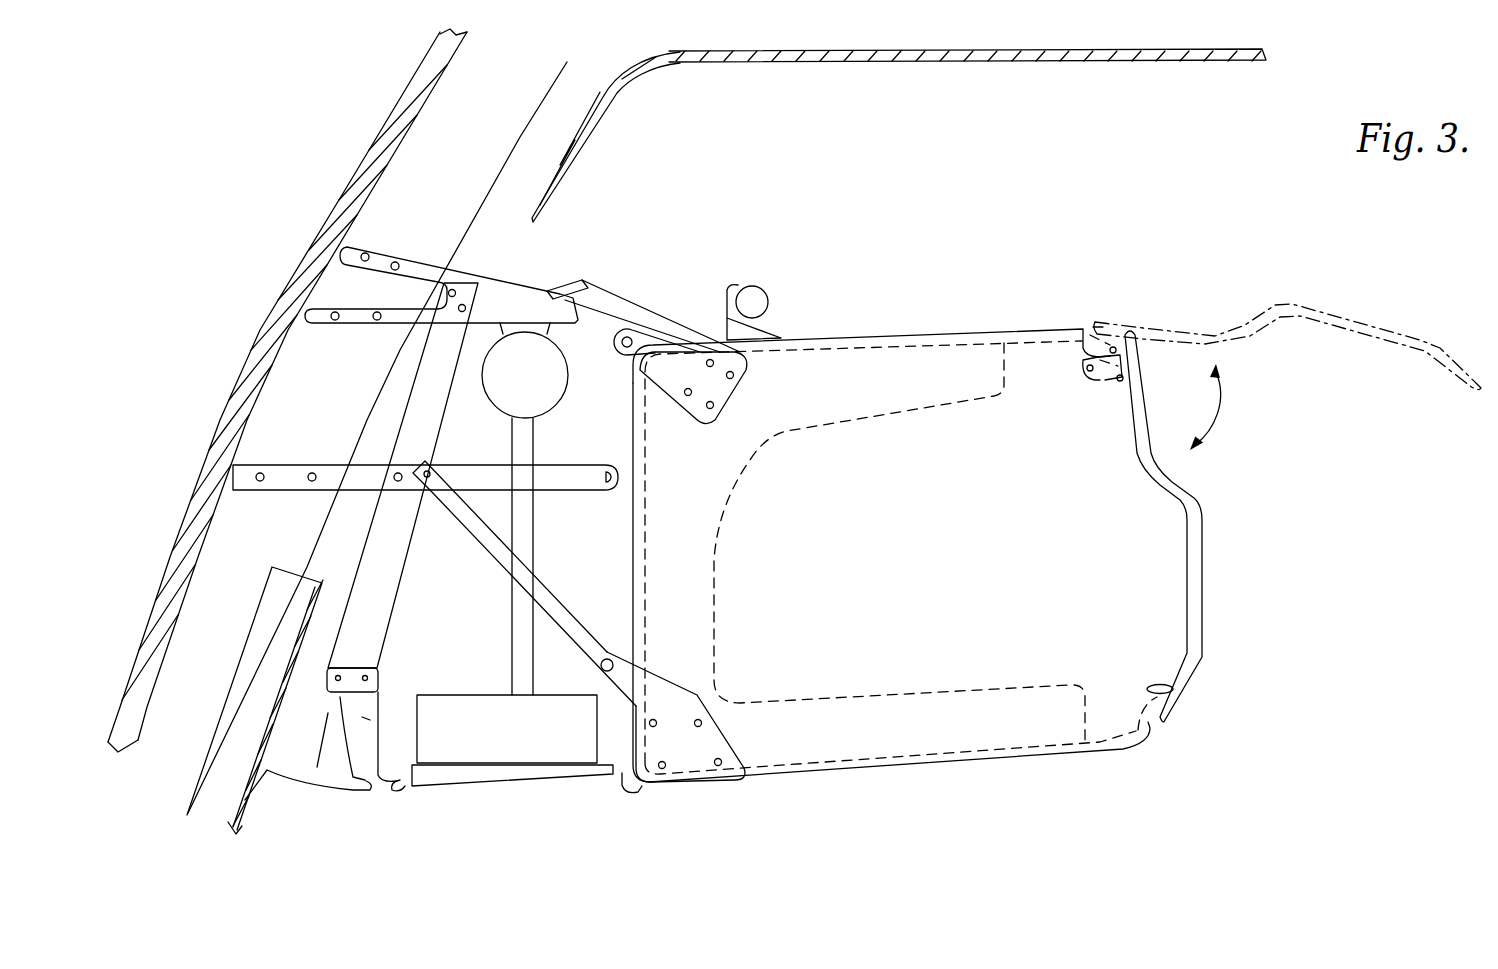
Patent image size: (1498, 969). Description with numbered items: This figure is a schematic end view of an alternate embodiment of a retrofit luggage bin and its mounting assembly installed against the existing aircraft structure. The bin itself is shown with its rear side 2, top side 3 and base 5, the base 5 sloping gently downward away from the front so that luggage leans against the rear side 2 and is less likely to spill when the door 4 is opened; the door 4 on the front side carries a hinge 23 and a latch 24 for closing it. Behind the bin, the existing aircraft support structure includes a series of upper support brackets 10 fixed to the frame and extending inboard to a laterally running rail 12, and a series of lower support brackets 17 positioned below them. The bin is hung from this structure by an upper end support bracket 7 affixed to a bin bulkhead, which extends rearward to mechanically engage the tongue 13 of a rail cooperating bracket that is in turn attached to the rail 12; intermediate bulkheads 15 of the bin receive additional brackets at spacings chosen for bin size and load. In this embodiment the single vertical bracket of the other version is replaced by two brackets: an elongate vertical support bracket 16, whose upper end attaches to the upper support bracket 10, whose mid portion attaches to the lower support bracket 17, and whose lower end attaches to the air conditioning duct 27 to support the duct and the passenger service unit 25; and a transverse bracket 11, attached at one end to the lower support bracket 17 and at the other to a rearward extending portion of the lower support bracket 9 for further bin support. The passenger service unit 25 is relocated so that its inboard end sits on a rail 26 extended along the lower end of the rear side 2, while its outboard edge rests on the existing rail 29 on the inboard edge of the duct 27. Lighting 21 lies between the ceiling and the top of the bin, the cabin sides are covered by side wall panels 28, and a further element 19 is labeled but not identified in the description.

The rear side 2 is at (647, 605).
The top side 3 is at (857, 343).
The door 4 is at (1357, 318).
The base 5 is at (987, 757).
The upper end support bracket 7 is at (643, 325).
The lower support bracket 9 is at (688, 753).
The upper support bracket 10 is at (420, 260).
The transverse bracket 11 is at (570, 627).
The rail 12 is at (609, 325).
The tongue 13 is at (590, 290).
The intermediate bulkhead 15 is at (758, 462).
The elongate vertical support bracket 16 is at (398, 566).
The lower support bracket 17 is at (549, 482).
The latch 19 is at (1197, 700).
The lighting 21 is at (769, 293).
The hinge 23 is at (1095, 382).
The latch 24 is at (1160, 673).
The passenger service unit 25 is at (532, 752).
The rail 26 is at (630, 797).
The air conditioning duct 27 is at (383, 710).
The side wall panel 28 is at (263, 723).
The rail 29 is at (400, 790).